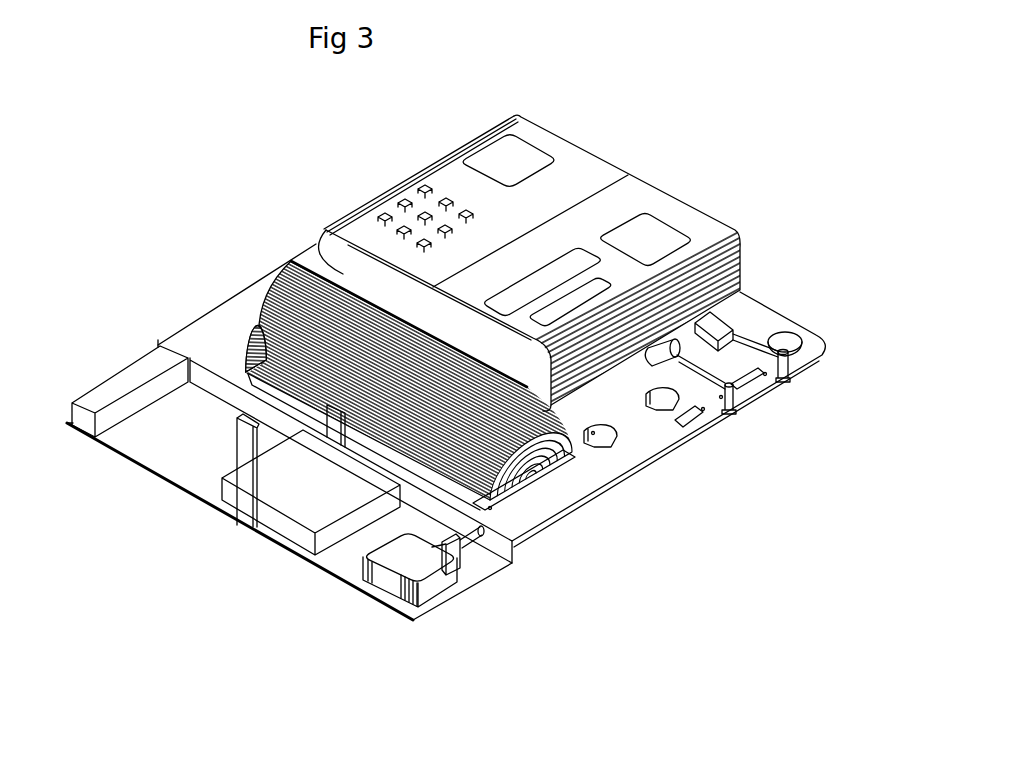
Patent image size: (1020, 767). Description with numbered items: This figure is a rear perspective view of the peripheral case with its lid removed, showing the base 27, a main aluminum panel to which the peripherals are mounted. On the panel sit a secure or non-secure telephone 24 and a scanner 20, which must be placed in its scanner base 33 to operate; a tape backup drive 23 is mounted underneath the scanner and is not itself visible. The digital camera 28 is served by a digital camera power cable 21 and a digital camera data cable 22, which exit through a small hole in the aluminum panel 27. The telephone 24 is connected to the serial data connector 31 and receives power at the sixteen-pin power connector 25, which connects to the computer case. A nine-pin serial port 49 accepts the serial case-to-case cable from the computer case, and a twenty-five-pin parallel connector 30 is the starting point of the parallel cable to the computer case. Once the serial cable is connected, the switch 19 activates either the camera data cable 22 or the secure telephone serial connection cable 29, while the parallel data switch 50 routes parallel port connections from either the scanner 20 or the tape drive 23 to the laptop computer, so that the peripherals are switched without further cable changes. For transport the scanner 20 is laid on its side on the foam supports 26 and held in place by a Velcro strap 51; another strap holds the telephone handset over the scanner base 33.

The switch 19 is at (607, 447).
The scanner 20 is at (563, 443).
The digital camera power cable 21 is at (400, 497).
The digital camera data cable 22 is at (475, 532).
The tape backup drive 23 is at (227, 402).
The secure telephone 24 is at (685, 210).
The power connector 25 is at (803, 346).
The foam supports 26 is at (282, 528).
The base 27 is at (543, 531).
The digital camera 28 is at (450, 587).
The secure telephone serial connection cable 29 is at (796, 373).
The parallel connector 30 is at (758, 383).
The serial data connector 31 is at (736, 408).
The scanner base 33 is at (518, 492).
The serial port 49 is at (703, 413).
The parallel data switch 50 is at (652, 408).
The Velcro strap 51 is at (247, 505).